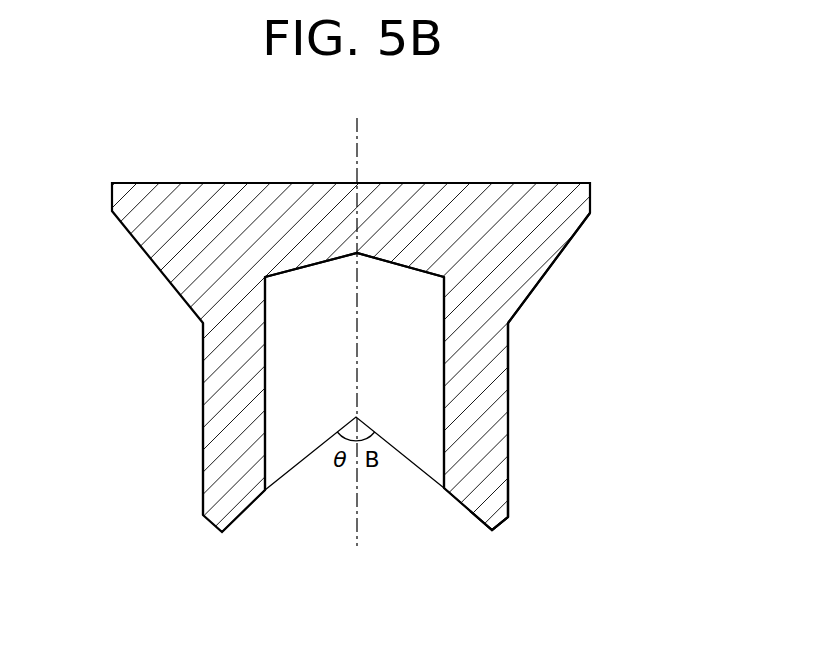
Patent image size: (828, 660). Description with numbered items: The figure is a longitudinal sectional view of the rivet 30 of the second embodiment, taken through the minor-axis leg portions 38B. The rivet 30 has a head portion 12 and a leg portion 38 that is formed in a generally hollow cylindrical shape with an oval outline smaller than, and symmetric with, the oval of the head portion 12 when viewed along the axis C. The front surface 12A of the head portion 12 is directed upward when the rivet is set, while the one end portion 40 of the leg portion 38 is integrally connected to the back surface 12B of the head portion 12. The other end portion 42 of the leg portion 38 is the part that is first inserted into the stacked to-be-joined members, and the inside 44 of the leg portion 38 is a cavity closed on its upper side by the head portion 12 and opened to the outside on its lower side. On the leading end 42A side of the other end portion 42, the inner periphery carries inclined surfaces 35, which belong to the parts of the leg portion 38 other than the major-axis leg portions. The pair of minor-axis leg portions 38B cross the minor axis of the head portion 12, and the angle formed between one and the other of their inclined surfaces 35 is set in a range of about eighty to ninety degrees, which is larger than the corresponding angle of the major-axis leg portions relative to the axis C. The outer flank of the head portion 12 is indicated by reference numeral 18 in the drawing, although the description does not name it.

The head portion 12 is at (563, 183).
The front surface of the head portion 12A is at (150, 183).
The back surface of the head portion 12B is at (417, 272).
The inclined surface 18 is at (583, 223).
The rivet 30 is at (414, 300).
The inclined surfaces 35 is at (235, 520).
The leg portion 38 is at (200, 415).
The minor-axis leg portions 38B is at (510, 392).
The one end portion 40 is at (497, 340).
The other end portion 42 is at (505, 505).
The leading end 42A is at (482, 525).
The inside of the leg portion 44 is at (275, 360).
The axis C is at (357, 142).